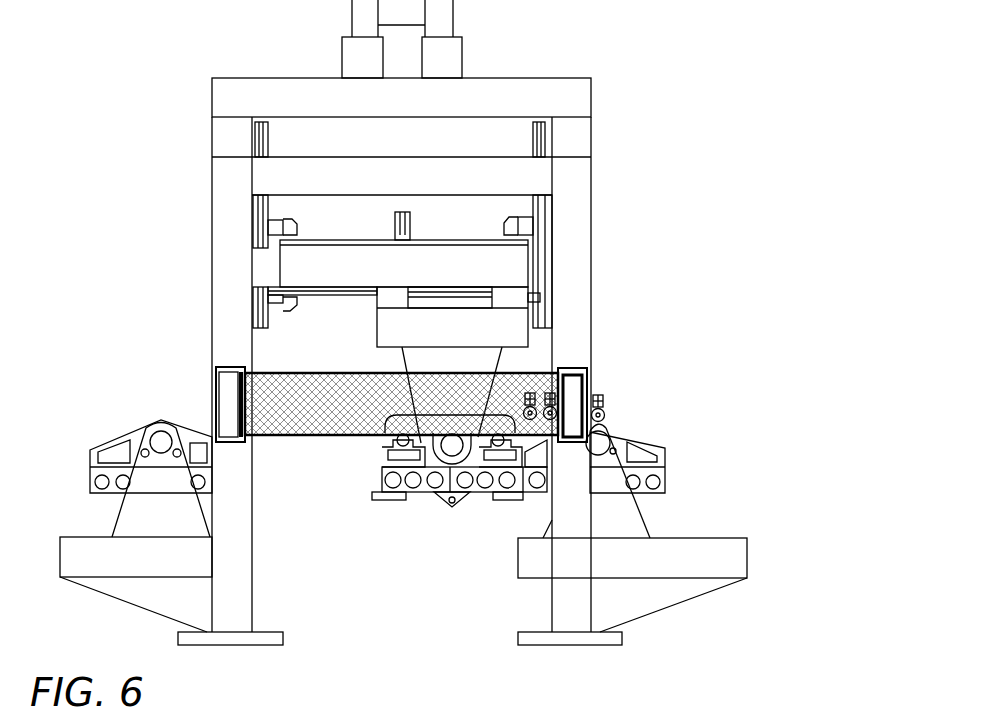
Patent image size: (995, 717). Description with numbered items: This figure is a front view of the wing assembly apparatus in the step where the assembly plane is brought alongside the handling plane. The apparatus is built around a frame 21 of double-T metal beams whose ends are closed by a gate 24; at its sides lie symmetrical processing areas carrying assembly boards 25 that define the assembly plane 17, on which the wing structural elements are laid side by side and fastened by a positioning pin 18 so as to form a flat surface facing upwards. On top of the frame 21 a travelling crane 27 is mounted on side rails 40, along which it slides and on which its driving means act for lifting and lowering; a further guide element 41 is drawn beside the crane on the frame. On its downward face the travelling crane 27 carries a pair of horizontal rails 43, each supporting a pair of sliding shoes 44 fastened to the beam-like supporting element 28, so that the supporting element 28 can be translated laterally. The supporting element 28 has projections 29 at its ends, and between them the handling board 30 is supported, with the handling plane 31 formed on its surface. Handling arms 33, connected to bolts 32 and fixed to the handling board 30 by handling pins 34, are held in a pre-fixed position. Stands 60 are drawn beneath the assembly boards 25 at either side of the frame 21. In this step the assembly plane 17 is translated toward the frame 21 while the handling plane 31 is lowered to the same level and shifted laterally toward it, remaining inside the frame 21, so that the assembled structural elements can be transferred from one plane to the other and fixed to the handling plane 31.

The frame 21 is at (282, 87).
The side rails 40 is at (268, 145).
The travelling crane 27 is at (320, 256).
The horizontal rails 43 is at (300, 282).
The sliding shoes 44 is at (508, 287).
The right guide bracket 41 is at (533, 222).
The supporting element 28 is at (520, 322).
The projections 29 is at (485, 352).
The handling plane 31 is at (405, 400).
The assembly boards 25 is at (210, 437).
The gate 24 is at (533, 393).
The handling board 30 is at (382, 462).
The bolts 32 is at (433, 492).
The handling arms 33 is at (468, 492).
The handling pins 34 is at (495, 492).
The assembly plane 17 is at (663, 448).
The positioning pin 18 is at (608, 430).
The stand 60 is at (167, 517).